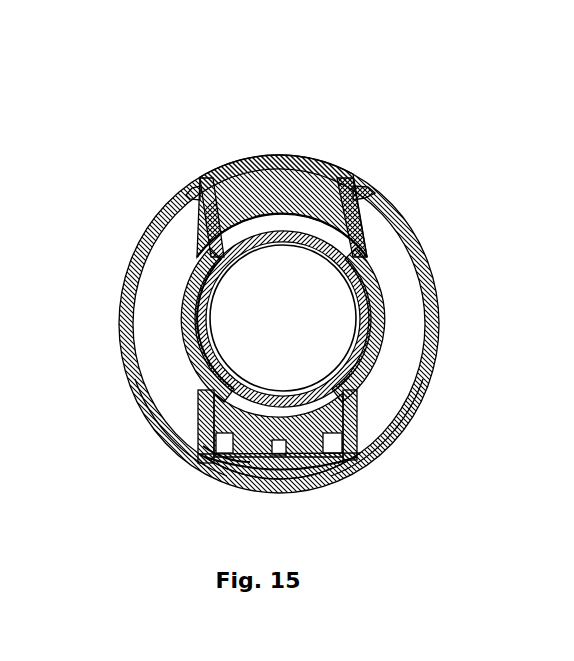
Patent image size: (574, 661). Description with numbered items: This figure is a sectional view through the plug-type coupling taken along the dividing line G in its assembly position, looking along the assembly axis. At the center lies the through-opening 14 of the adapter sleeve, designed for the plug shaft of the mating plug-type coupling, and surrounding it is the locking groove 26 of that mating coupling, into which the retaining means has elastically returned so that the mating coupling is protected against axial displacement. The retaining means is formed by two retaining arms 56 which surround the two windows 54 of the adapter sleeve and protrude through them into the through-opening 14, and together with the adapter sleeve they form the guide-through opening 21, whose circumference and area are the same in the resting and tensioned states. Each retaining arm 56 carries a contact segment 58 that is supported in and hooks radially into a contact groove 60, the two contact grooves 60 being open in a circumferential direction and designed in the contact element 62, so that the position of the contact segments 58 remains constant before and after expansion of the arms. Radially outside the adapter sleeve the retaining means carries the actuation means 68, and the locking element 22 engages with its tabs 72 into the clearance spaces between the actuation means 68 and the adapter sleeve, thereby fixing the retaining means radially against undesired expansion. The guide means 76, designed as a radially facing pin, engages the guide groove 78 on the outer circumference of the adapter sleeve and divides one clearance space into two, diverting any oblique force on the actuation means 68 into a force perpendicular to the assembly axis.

The dividing line G is at (290, 127).
The through-opening 14 is at (264, 335).
The guide-through opening 21 is at (207, 303).
The locking element 22 is at (145, 404).
The locking groove 26 is at (335, 245).
The windows 54 is at (143, 357).
The retaining arms 56 is at (173, 316).
The contact segment 58 is at (190, 194).
The contact groove 60 is at (207, 186).
The contact element 62 is at (277, 183).
The actuation means 68 is at (280, 495).
The tab 72 is at (244, 470).
The guide means 76 is at (218, 460).
The guide groove 78 is at (282, 440).